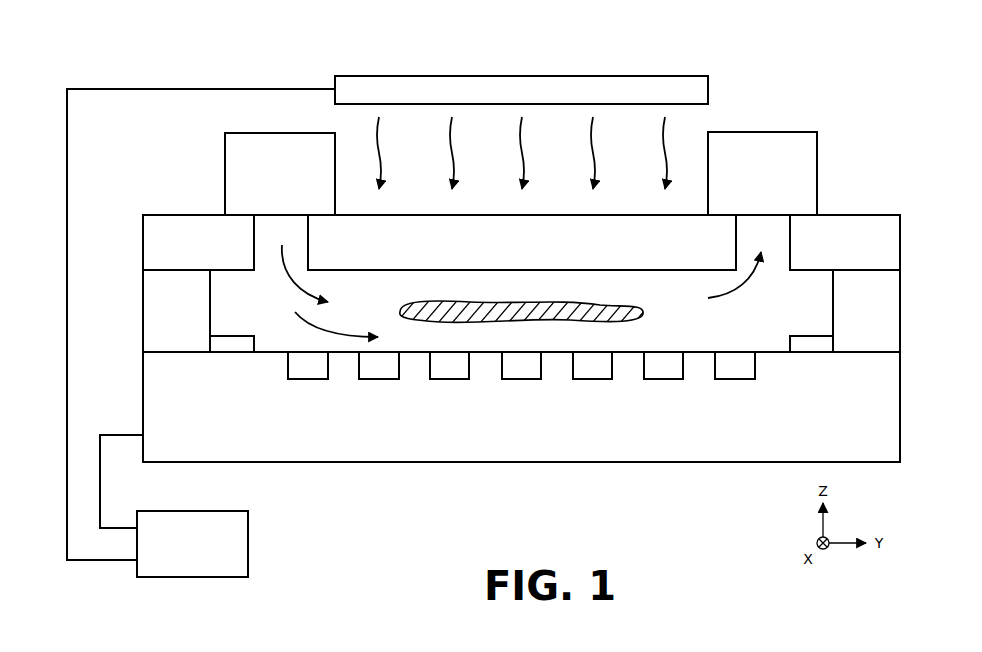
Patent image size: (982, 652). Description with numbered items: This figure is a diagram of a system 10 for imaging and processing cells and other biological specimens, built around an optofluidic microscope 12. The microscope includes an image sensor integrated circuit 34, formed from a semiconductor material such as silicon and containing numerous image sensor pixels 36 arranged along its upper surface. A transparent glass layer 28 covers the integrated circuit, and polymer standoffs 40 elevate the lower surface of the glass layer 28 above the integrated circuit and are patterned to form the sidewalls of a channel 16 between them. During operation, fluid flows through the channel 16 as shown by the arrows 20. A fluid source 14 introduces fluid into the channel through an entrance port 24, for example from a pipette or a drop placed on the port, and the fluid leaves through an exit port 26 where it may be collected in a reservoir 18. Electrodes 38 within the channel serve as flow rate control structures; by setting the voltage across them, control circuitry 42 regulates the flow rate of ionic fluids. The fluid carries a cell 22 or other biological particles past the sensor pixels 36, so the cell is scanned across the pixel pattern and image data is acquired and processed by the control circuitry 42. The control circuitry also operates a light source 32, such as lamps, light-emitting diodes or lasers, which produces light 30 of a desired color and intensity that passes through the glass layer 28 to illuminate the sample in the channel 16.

The system 10 is at (778, 40).
The optofluidic microscope 12 is at (57, 215).
The fluid source 14 is at (280, 174).
The channel 16 is at (688, 318).
The reservoir 18 is at (762, 173).
The fluid flow arrows 20 is at (342, 340).
The cell 22 is at (410, 304).
The entrance port 24 is at (265, 260).
The exit port 26 is at (780, 260).
The glass layer 28 is at (521, 242).
The light 30 is at (379, 140).
The light source 32 is at (457, 78).
The image sensor integrated circuit 34 is at (521, 394).
The image sensor pixels 36 is at (453, 375).
The electrodes 38 is at (231, 346).
The standoffs 40 is at (521, 311).
The control circuitry 42 is at (243, 547).